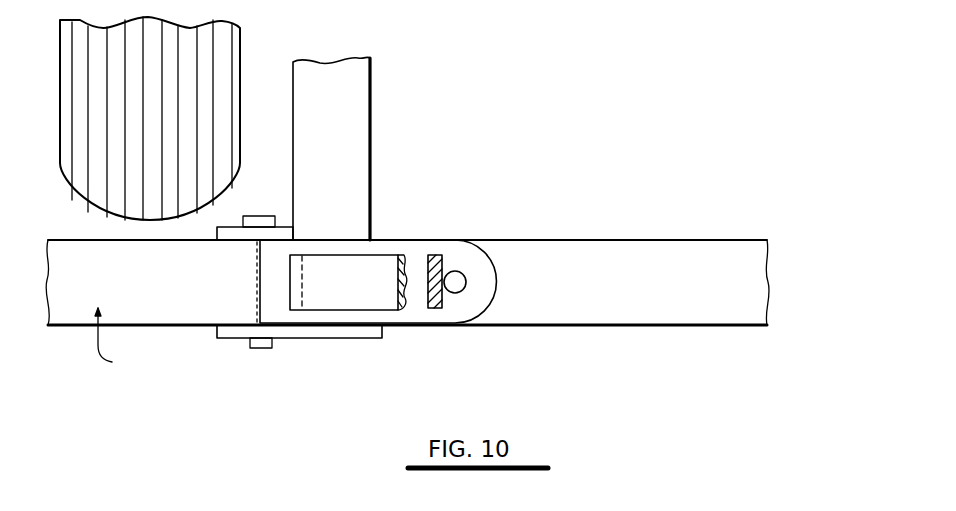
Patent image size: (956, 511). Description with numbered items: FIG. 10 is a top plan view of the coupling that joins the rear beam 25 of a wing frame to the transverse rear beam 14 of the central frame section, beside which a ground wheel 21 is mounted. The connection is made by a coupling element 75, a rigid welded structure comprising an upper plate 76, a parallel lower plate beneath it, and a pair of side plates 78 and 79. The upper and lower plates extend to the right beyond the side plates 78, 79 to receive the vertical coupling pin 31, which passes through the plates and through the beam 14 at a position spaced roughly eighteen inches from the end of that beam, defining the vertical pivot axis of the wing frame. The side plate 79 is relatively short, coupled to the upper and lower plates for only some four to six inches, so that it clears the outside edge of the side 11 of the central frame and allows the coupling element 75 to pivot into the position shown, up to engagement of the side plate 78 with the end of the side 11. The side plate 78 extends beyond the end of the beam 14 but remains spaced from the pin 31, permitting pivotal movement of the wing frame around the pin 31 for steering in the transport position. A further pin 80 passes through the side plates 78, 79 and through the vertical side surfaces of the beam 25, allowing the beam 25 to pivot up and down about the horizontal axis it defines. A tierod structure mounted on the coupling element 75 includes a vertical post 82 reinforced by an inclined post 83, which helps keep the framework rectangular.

The side 11 is at (350, 113).
The transverse rear beam 14 is at (662, 255).
The ground wheel 21 is at (244, 80).
The rear beam 25 is at (120, 342).
The pivot pin 31 is at (461, 278).
The coupling element 75 is at (405, 228).
The upper plate 76 is at (412, 322).
The side plate 78 is at (316, 333).
The side plate 79 is at (235, 229).
The pin 80 is at (260, 350).
The vertical post 82 is at (447, 312).
The inclined post 83 is at (345, 272).